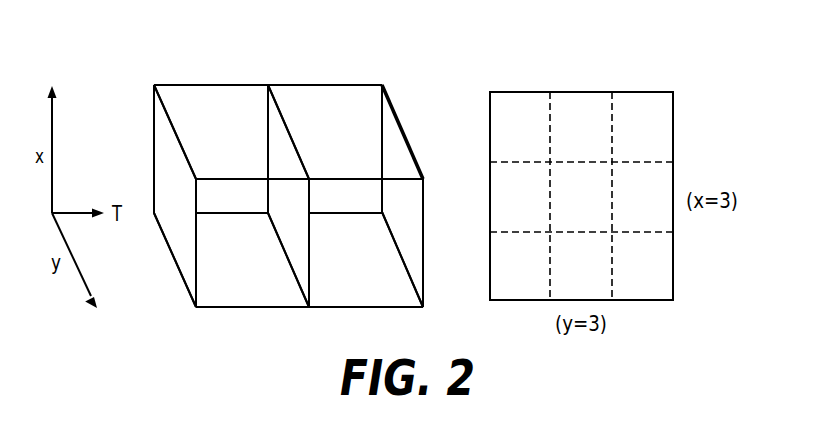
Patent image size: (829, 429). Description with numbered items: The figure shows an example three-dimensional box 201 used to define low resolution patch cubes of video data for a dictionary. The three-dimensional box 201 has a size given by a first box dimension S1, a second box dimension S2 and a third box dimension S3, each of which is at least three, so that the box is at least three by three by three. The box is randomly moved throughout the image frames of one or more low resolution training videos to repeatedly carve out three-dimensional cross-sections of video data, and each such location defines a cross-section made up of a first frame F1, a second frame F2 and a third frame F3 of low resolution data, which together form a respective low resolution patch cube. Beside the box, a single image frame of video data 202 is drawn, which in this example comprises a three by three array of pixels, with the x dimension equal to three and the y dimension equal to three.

The 3D box 201 is at (399, 88).
The single image frame of video data 202 is at (661, 79).
The first frame F1 is at (152, 133).
The second frame F2 is at (262, 134).
The third frame F3 is at (372, 134).
The first box dimension S1 is at (438, 243).
The second box dimension S2 is at (408, 132).
The third box dimension S3 is at (309, 327).